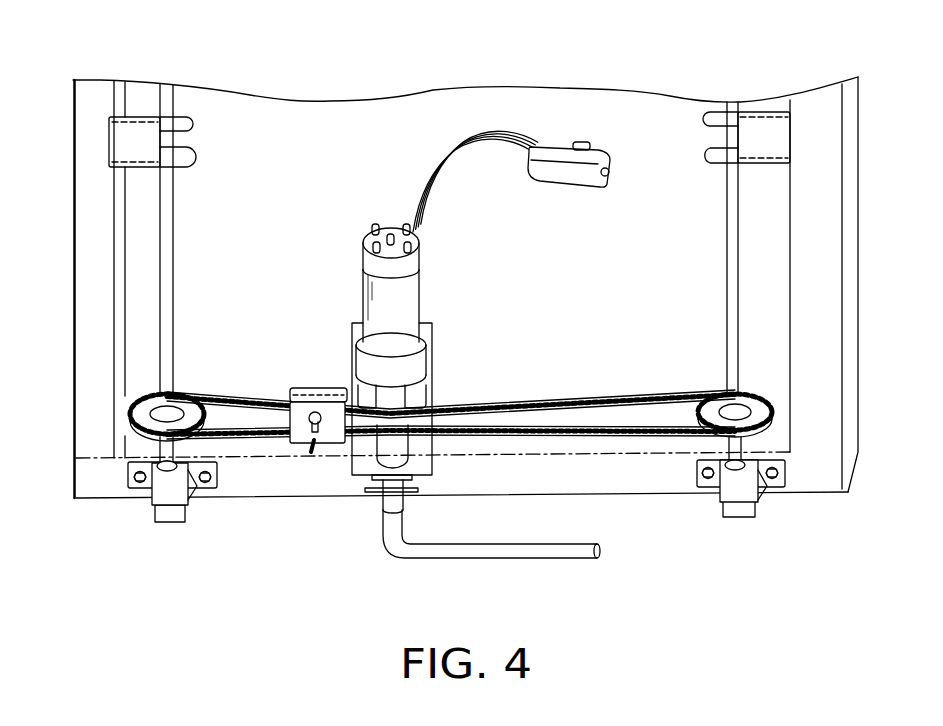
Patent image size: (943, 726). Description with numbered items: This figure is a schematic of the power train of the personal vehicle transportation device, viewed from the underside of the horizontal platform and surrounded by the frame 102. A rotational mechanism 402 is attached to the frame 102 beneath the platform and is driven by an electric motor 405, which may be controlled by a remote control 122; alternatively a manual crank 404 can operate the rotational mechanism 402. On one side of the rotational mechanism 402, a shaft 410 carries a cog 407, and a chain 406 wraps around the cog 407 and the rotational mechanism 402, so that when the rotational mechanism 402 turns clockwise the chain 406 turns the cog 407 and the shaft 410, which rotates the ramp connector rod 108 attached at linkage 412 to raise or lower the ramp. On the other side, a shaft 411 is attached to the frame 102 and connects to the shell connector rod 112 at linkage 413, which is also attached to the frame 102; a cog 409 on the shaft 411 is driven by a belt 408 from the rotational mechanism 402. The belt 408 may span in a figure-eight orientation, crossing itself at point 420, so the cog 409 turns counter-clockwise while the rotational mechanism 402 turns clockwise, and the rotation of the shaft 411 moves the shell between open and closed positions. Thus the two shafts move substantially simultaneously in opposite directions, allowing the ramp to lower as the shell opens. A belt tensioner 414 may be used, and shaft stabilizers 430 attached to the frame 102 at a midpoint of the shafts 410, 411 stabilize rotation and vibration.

The frame 102 is at (832, 248).
The ramp connector rod 108 is at (176, 516).
The shell connector rod 112 is at (745, 510).
The remote control 122 is at (548, 147).
The rotational mechanism 402 is at (383, 450).
The manual crank 404 is at (401, 553).
The electric motor 405 is at (392, 265).
The chain 406 is at (137, 437).
The cog 407 is at (138, 403).
The belt 408 is at (653, 423).
The cog 409 is at (762, 413).
The shaft 410 is at (164, 88).
The shaft 411 is at (729, 110).
The linkage 412 is at (167, 513).
The linkage 413 is at (722, 500).
The belt tensioner 414 is at (297, 438).
The crossing point 420 is at (528, 420).
The shaft stabilizers 430 is at (115, 145).